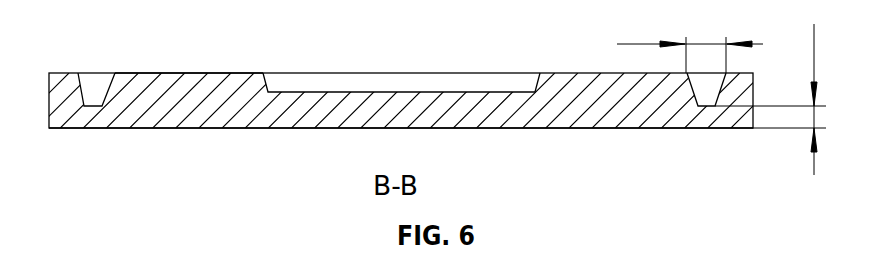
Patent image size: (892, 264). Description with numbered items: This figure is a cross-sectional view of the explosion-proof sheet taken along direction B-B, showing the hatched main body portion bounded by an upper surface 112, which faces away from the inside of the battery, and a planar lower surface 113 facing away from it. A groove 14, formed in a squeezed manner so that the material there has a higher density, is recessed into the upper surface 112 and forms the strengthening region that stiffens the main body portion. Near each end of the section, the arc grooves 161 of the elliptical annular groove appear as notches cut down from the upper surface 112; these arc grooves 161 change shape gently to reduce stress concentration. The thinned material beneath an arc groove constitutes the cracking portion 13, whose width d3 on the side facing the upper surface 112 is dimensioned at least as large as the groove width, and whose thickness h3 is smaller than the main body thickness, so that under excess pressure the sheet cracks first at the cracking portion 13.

The cracking portion 13 is at (404, 72).
The arc grooves 161 is at (90, 97).
The groove 14 is at (408, 82).
The upper surface 112 is at (213, 73).
The lower surface 113 is at (223, 128).
The width of the cracking portion d3 is at (690, 42).
The thickness of the cracking portion h3 is at (770, 99).